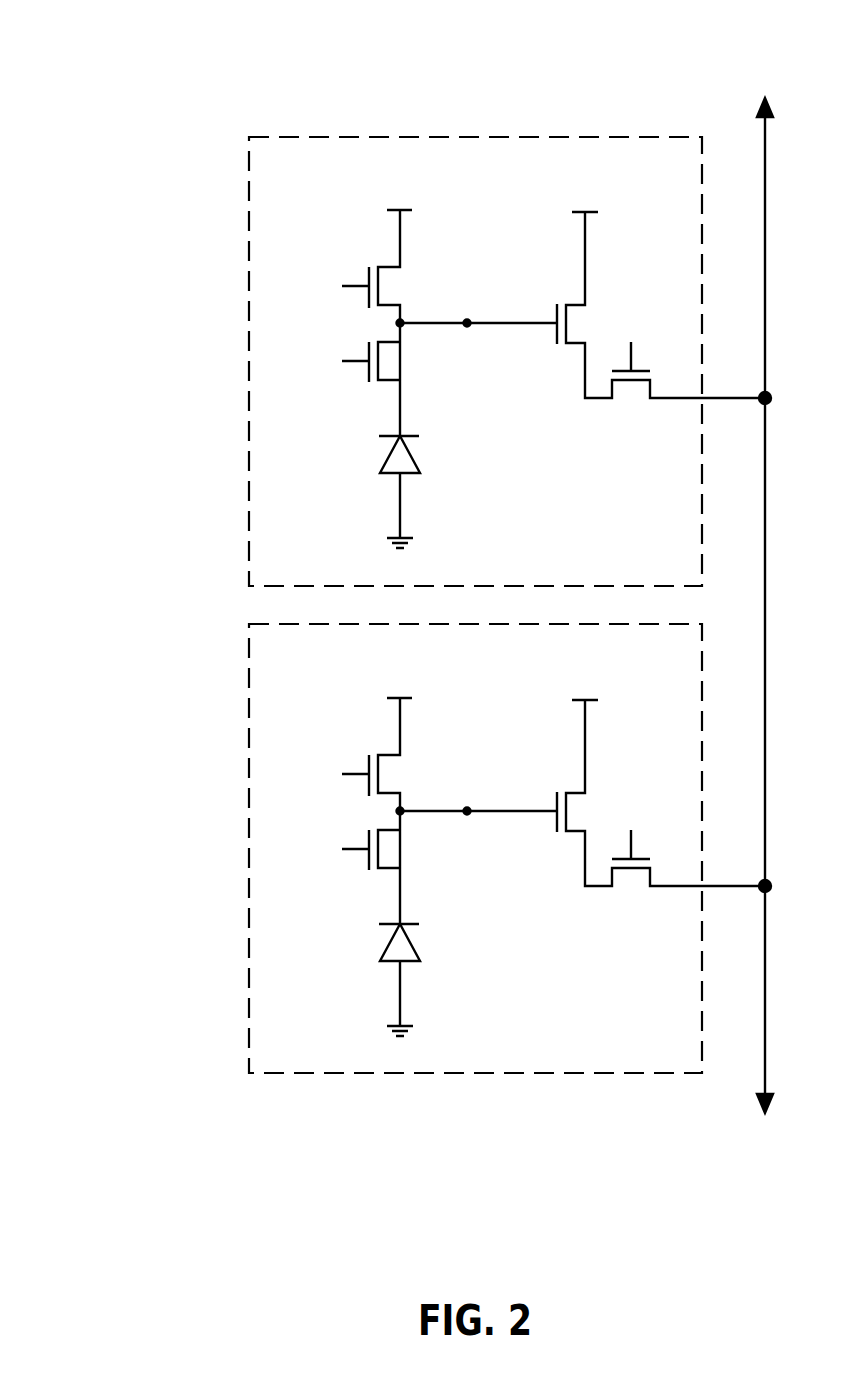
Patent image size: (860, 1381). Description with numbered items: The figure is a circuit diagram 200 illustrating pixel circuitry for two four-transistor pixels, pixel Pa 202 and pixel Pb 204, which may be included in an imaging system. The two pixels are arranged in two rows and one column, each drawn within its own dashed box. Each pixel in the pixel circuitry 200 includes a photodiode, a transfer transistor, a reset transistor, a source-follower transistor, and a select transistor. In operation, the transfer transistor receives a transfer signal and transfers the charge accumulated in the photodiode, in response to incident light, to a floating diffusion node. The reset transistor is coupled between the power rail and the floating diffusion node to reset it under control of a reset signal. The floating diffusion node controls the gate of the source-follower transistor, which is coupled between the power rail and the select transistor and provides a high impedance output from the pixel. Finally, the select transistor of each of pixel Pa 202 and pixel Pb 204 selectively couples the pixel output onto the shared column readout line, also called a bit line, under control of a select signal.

The circuit diagram 200 is at (42, 26).
The pixel Pa 202 is at (249, 156).
The pixel Pb 204 is at (249, 644).